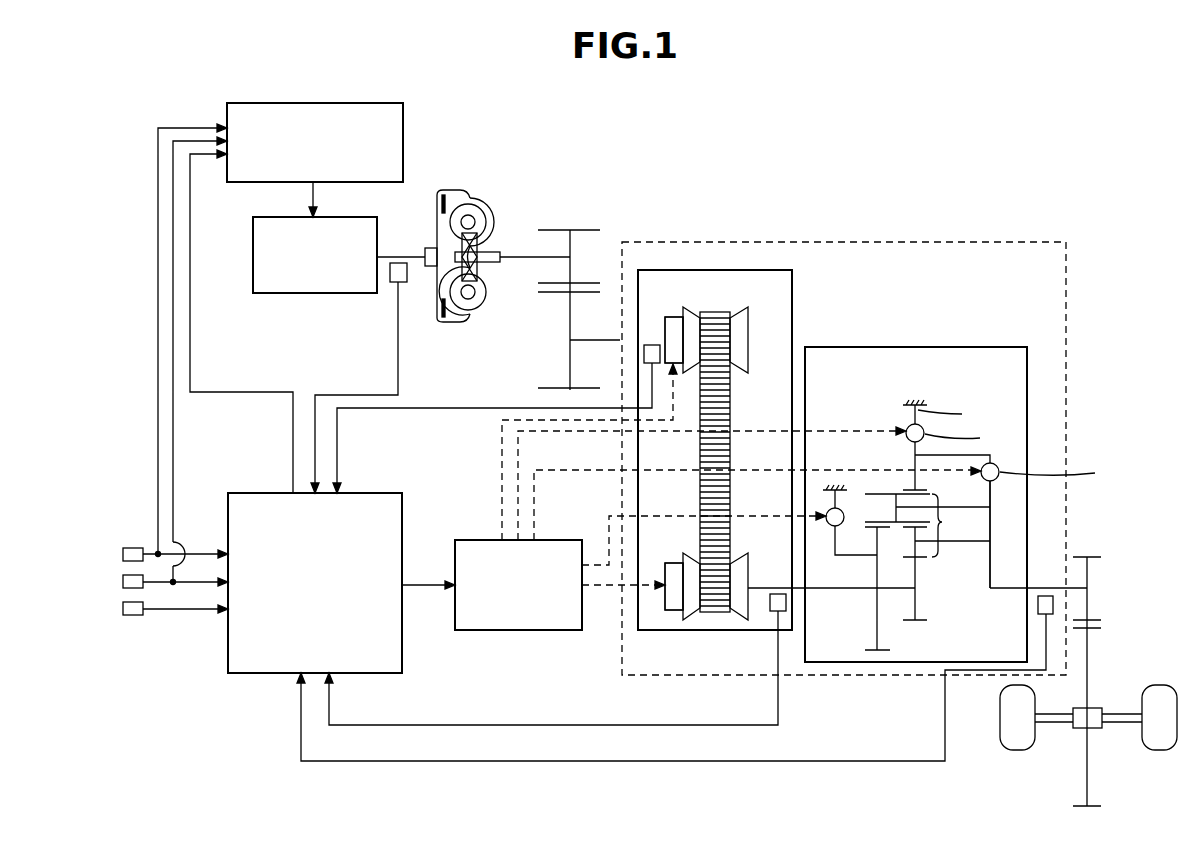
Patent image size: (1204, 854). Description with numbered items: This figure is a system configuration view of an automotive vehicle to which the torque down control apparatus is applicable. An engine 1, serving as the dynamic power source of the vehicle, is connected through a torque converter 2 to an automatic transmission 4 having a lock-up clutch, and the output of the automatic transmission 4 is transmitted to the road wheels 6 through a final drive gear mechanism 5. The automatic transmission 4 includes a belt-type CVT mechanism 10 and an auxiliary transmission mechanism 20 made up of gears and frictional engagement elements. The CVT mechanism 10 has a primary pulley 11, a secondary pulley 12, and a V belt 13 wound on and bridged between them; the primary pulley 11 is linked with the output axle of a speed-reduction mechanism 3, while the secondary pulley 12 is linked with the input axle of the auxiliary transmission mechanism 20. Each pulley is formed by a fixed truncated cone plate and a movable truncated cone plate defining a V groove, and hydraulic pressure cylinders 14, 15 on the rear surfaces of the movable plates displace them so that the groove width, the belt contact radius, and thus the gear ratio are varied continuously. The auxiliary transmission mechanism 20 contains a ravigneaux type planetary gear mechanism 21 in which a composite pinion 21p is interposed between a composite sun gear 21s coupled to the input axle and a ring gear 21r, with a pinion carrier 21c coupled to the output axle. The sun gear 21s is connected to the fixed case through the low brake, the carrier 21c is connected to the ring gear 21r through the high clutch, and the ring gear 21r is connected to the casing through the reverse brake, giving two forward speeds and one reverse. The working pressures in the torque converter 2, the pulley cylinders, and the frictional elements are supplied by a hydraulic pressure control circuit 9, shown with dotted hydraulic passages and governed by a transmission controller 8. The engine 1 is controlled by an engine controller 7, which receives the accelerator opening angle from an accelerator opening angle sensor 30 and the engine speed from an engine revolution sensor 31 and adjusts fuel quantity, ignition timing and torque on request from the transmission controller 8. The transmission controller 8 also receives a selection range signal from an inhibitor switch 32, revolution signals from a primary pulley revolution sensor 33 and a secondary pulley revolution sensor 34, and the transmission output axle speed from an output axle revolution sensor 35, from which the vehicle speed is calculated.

The engine 1 is at (335, 217).
The torque converter 2 is at (483, 192).
The speed-reduction mechanism 3 is at (584, 220).
The automatic transmission 4 is at (1068, 262).
The final drive gear mechanism 5 is at (1112, 598).
The road wheels 6 is at (1160, 685).
The engine controller 7 is at (358, 104).
The transmission controller 8 is at (362, 493).
The hydraulic pressure control circuit 9 is at (550, 540).
The CVT mechanism 10 is at (750, 270).
The primary pulley 11 is at (750, 320).
The secondary pulley 12 is at (730, 620).
The V belt 13 is at (735, 460).
The hydraulic pressure cylinder 14 is at (665, 332).
The hydraulic pressure cylinder 15 is at (675, 612).
The auxiliary transmission mechanism 20 is at (965, 347).
The ravigneaux type planetary gear mechanism 21 is at (973, 567).
The ring gear 21r is at (910, 488).
The composite pinion 21p is at (921, 525).
The composite sun gear 21s is at (895, 655).
The pinion carrier 21c is at (1000, 510).
The accelerator opening angle sensor 30 is at (120, 554).
The engine revolution sensor 31 is at (120, 581).
The inhibitor switch 32 is at (120, 608).
The primary pulley revolution sensor 33 is at (644, 353).
The secondary pulley revolution sensor 34 is at (772, 611).
The output axle revolution sensor 35 is at (1038, 602).